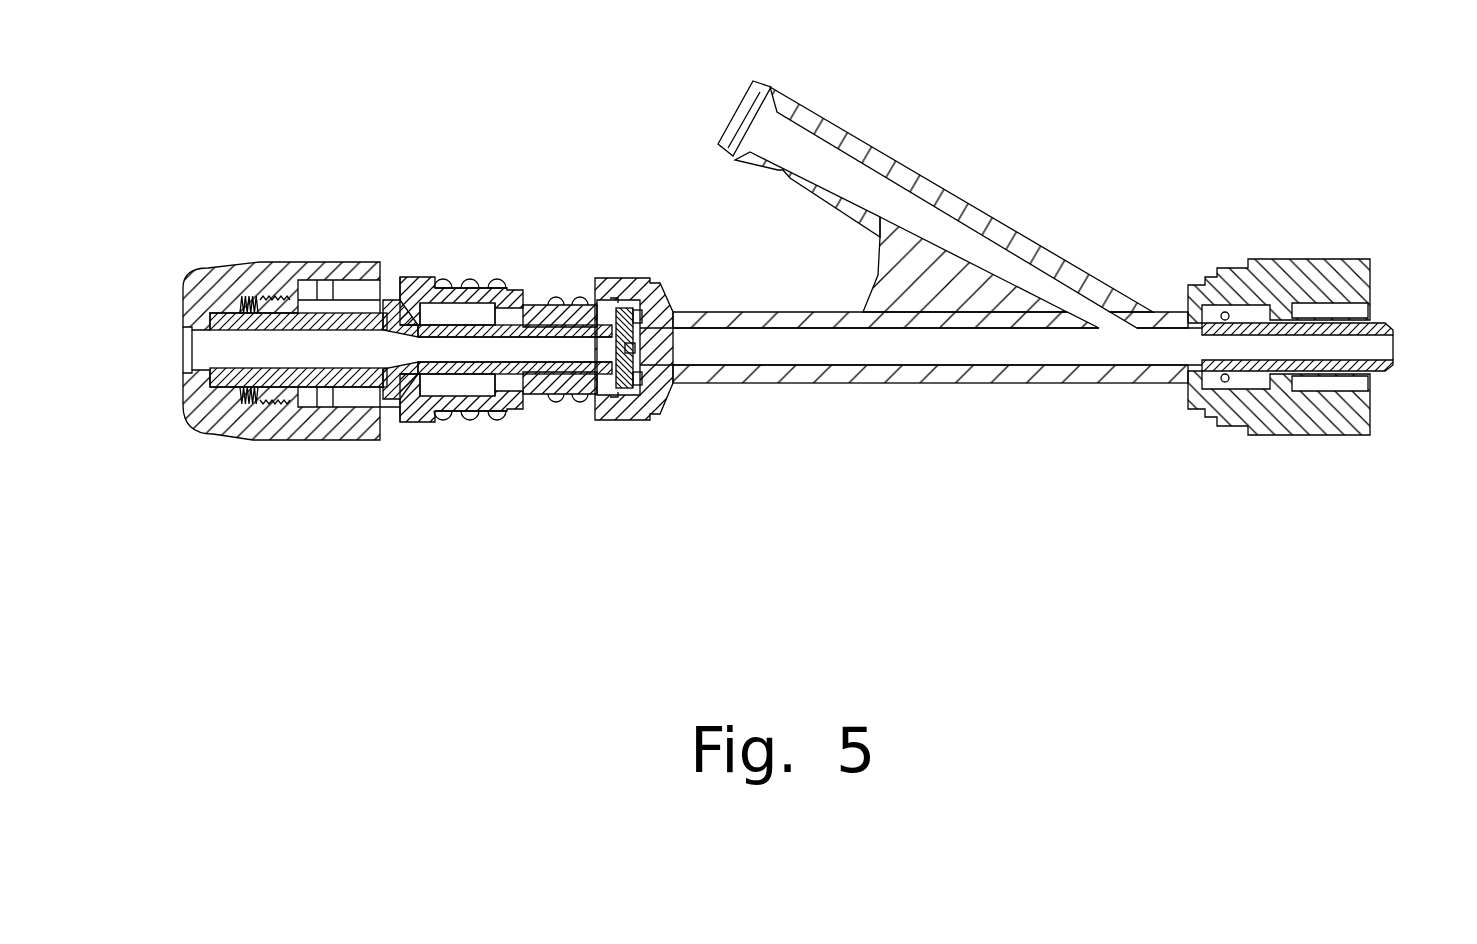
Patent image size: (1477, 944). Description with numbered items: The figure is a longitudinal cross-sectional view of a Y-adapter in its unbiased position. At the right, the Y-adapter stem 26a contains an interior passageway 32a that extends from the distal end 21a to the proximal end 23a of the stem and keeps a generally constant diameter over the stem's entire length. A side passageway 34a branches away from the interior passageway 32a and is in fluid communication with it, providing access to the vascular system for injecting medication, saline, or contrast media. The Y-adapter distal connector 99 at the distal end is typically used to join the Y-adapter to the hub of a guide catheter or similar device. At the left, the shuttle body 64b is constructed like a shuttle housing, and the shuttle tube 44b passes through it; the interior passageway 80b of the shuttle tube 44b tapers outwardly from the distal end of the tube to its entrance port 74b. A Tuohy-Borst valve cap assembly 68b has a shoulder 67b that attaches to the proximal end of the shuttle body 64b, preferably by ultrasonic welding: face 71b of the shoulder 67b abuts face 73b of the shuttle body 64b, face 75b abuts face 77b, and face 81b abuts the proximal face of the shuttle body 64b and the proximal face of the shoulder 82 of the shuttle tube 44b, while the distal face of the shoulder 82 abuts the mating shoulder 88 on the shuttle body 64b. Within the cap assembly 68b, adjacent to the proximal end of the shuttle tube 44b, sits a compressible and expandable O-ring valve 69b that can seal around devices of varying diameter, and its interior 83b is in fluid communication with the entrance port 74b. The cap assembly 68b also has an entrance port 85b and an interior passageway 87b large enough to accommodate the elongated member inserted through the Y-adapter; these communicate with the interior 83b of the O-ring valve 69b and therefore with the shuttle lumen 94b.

The distal end 21a is at (1395, 328).
The proximal end 23a is at (655, 276).
The Y-adapter stem 26a is at (884, 376).
The interior passageway 32a is at (987, 350).
The side passageway 34a is at (785, 130).
The shuttle tube 44b is at (557, 330).
The shuttle body 64b is at (451, 424).
The shoulder 67b is at (397, 423).
The Tuohy-Borst valve cap assembly 68b is at (213, 435).
The O-ring valve 69b is at (383, 337).
The face 71b is at (403, 302).
The face 73b is at (424, 283).
The entrance port 74b is at (377, 327).
The face 75b is at (425, 407).
The face 77b is at (440, 398).
The interior passageway 80b is at (541, 348).
The face 81b is at (380, 405).
The shoulder 82 is at (405, 298).
The interior 83b is at (367, 350).
The entrance port 85b is at (178, 358).
The interior passageway 87b is at (215, 335).
The mating shoulder 88 is at (455, 283).
The shuttle lumen 94b is at (578, 348).
The Y-adapter distal connector 99 is at (1283, 257).